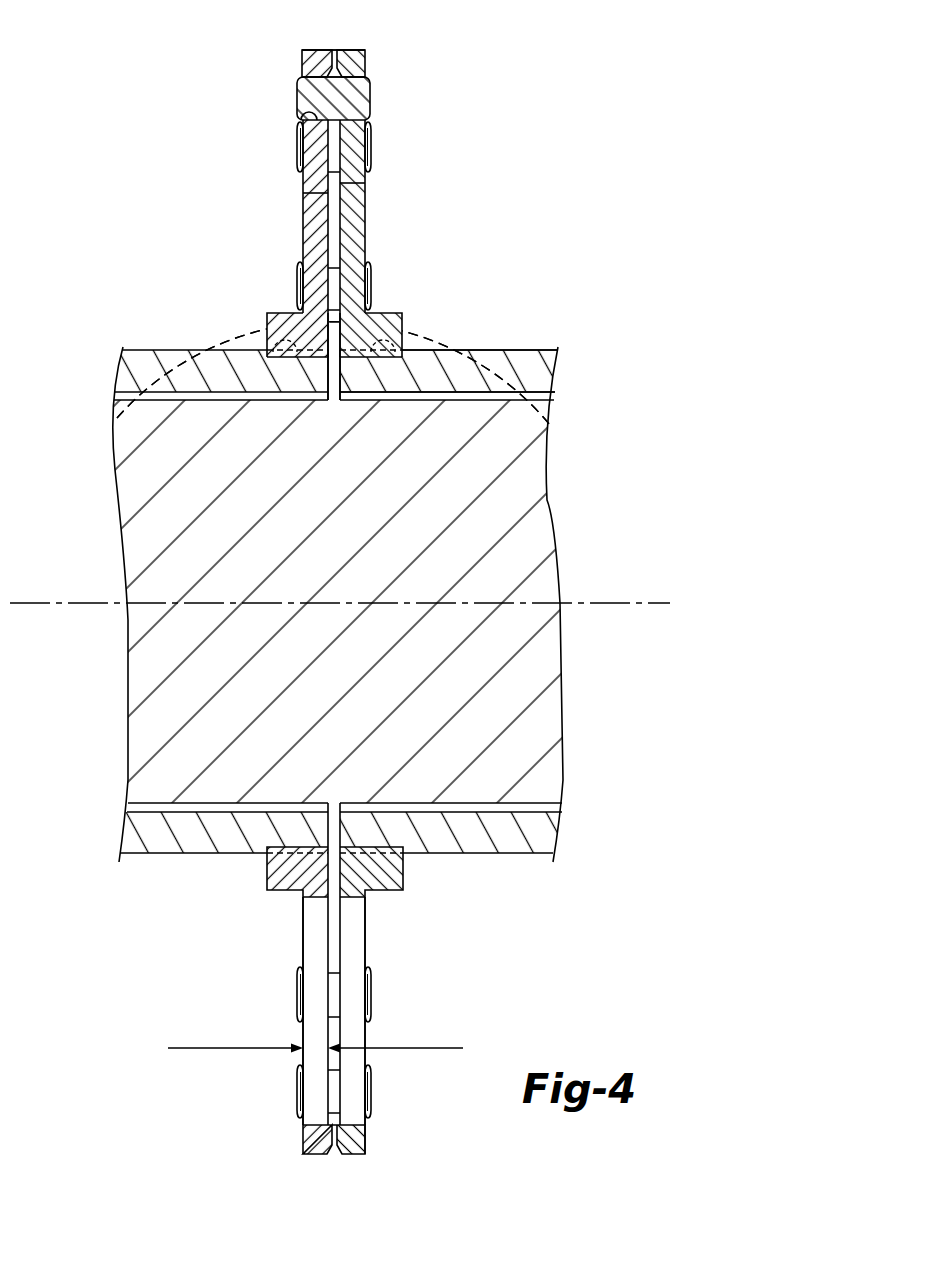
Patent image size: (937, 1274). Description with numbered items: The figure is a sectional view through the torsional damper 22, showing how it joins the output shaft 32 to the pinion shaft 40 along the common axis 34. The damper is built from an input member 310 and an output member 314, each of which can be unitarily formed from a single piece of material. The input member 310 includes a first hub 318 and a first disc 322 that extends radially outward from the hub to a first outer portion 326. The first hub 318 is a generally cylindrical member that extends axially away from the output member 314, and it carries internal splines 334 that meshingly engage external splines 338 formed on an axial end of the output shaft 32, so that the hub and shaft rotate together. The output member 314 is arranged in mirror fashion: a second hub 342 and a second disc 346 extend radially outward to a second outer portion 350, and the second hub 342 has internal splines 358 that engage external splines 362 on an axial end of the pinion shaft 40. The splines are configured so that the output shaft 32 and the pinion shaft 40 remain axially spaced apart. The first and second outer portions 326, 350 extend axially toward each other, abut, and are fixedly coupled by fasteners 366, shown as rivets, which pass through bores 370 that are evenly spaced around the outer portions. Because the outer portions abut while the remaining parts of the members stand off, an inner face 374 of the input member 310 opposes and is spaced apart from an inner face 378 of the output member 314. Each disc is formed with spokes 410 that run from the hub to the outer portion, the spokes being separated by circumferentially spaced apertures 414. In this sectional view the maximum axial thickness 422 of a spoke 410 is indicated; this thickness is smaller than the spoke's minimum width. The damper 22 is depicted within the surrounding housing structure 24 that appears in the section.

The torsional damper 22 is at (189, 1102).
The hub body 24 is at (540, 775).
The output shaft 32 is at (463, 387).
The axis 34 is at (600, 603).
The pinion shaft 40 is at (203, 390).
The input member 310 is at (374, 43).
The output member 314 is at (294, 43).
The first hub 318 is at (402, 318).
The first disc 322 is at (365, 212).
The first outer portion 326 is at (366, 64).
The internal splines 334 is at (373, 357).
The external splines 338 is at (550, 425).
The second hub 342 is at (267, 318).
The second disc 346 is at (303, 206).
The second outer portion 350 is at (302, 64).
The internal splines 358 is at (283, 390).
The external splines 362 is at (117, 418).
The fasteners 366 is at (372, 100).
The bores 370 is at (300, 107).
The inner face 374 is at (365, 183).
The inner face 378 is at (303, 193).
The spokes 410 is at (303, 233).
The apertures 414 is at (312, 945).
The maximum axial thickness 422 is at (203, 1047).